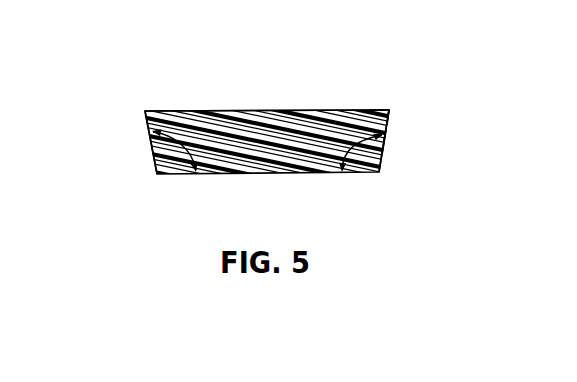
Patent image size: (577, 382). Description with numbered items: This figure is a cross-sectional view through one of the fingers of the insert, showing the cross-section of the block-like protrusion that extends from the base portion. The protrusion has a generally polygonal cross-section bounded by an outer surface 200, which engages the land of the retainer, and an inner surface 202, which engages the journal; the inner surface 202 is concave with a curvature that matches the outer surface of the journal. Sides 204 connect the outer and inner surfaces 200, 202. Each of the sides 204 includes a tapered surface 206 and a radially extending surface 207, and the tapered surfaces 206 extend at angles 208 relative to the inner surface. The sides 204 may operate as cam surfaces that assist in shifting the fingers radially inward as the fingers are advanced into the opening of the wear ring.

The outer surface 200 is at (428, 37).
The inner surface 202 is at (255, 111).
The sides 204 is at (147, 153).
The tapered surface 206 is at (390, 143).
The radially extending surface 207 is at (393, 113).
The angles 208 is at (177, 138).